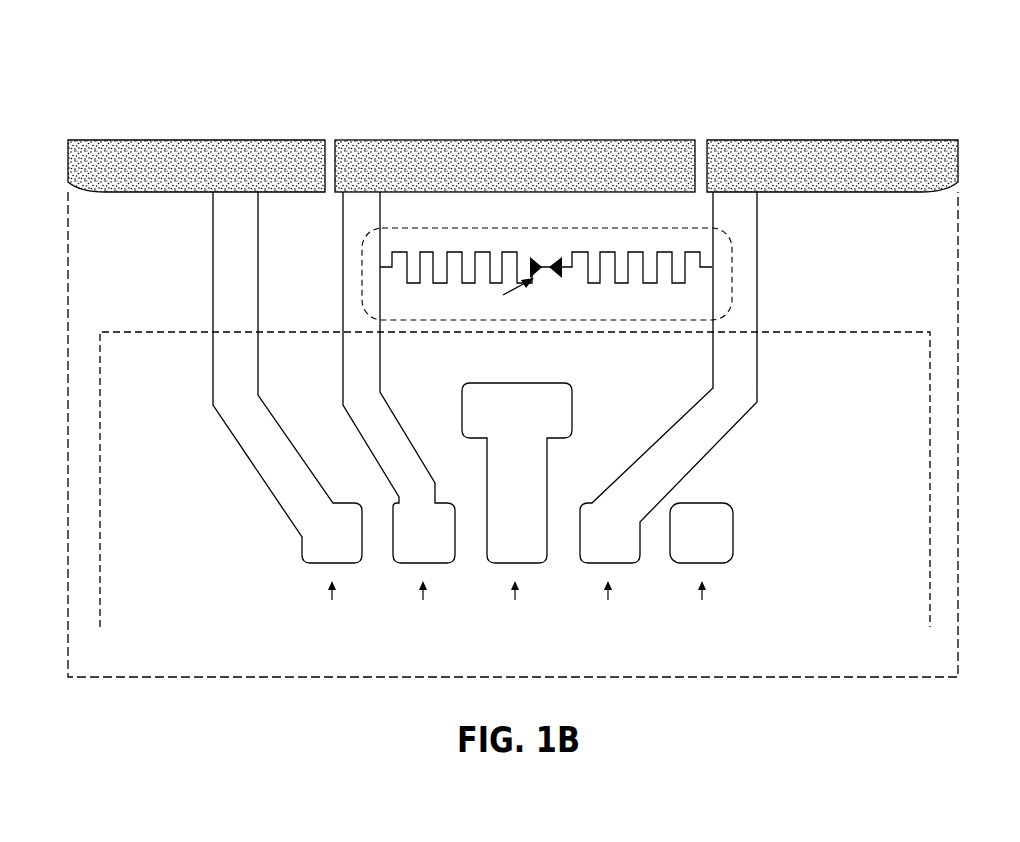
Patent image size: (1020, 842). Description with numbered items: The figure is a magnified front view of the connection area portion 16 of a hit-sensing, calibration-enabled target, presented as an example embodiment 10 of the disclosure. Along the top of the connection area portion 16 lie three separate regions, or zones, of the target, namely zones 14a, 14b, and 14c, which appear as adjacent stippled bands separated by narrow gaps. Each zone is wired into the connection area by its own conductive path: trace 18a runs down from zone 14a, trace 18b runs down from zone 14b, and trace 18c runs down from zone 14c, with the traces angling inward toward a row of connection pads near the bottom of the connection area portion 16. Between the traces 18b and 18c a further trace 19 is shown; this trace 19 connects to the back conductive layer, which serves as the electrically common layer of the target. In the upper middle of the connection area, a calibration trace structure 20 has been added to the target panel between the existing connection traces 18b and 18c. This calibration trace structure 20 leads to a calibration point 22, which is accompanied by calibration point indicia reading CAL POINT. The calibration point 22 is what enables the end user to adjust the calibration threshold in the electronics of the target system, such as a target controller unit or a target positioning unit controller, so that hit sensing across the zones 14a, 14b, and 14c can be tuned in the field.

The example embodiment 10 is at (130, 42).
The region (zone) 14a is at (235, 165).
The region (zone) 14b is at (555, 162).
The region (zone) 14c is at (758, 162).
The connection area portion 16 is at (822, 692).
The trace 18a is at (265, 468).
The trace 18b is at (353, 358).
The trace 18c is at (722, 360).
The trace 19 is at (562, 407).
The calibration trace structure 20 is at (758, 275).
The calibration point 22 is at (550, 258).